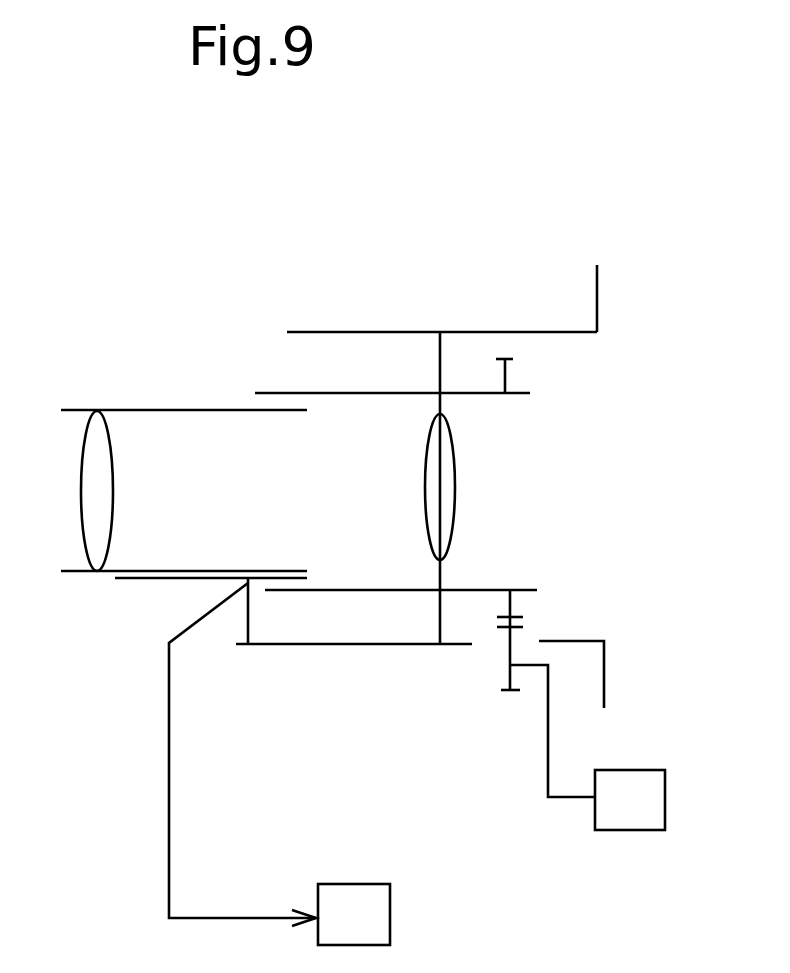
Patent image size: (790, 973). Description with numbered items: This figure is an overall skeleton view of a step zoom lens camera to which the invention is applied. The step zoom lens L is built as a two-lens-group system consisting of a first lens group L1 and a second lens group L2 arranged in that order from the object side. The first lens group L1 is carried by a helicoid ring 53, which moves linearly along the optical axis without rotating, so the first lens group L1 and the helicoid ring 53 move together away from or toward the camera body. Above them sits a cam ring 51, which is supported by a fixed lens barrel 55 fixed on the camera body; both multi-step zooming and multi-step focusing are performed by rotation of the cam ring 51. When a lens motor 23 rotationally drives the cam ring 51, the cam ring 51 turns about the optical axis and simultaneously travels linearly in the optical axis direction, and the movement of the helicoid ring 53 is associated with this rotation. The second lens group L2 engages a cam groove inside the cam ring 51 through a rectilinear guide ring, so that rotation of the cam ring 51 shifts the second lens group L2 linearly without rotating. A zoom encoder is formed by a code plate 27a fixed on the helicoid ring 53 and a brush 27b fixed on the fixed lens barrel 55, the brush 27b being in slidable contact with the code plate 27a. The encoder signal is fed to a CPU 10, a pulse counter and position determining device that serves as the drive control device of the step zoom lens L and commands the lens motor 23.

The helicoid ring 53 is at (149, 408).
The cam ring 51 is at (262, 390).
The fixed lens barrel 55 is at (495, 330).
The code plate 27a is at (123, 583).
The brush 27b is at (246, 615).
The CPU 10 is at (378, 893).
The lens motor 23 is at (650, 787).
The first lens group L1 is at (113, 482).
The second lens group L2 is at (437, 483).
The step zoom lens L is at (363, 498).